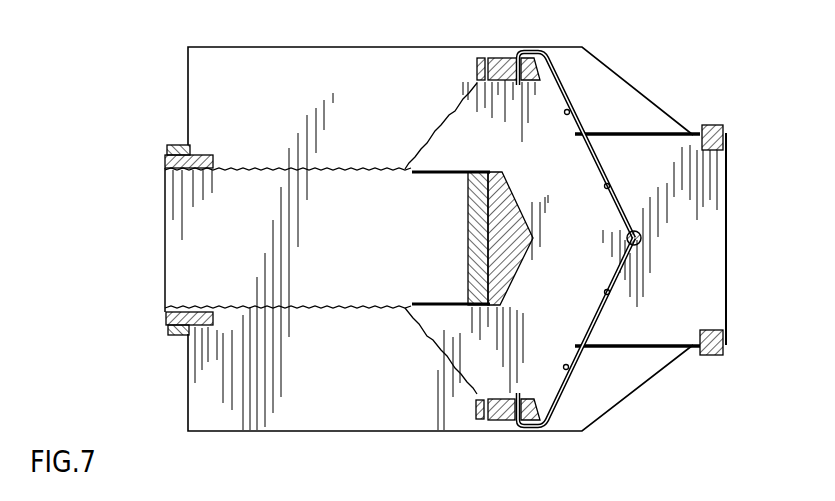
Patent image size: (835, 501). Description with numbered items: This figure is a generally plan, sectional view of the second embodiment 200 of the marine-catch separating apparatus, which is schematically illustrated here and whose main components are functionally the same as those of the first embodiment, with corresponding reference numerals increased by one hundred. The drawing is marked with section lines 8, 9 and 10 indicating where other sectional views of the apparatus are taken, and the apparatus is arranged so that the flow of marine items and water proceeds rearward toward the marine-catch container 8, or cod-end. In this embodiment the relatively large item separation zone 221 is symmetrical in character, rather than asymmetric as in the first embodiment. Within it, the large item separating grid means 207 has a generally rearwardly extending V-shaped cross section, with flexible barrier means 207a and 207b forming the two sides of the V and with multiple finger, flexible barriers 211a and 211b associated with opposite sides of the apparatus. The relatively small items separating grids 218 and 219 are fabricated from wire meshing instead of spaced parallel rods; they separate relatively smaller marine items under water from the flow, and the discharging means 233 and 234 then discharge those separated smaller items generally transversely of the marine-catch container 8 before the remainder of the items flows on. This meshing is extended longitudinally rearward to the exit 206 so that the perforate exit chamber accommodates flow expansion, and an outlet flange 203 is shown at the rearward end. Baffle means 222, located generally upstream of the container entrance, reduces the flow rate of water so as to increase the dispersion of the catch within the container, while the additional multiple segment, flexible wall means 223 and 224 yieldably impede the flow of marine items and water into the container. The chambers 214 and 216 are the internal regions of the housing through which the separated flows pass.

The second embodiment 200 is at (407, 46).
The outlet flange 203 is at (727, 150).
The exit 206 is at (168, 329).
The large item separating grid means 207 is at (641, 240).
The flexible barrier means 207a is at (615, 187).
The flexible barrier means 207b is at (577, 357).
The multiple finger flexible barrier 211a is at (643, 133).
The multiple finger flexible barrier 211b is at (650, 346).
The outlet chamber 214 is at (700, 228).
The central chamber 216 is at (589, 245).
The small items separating grid 218 is at (430, 348).
The small items separating grid 219 is at (425, 147).
The large item separation zone 221 is at (347, 250).
The baffle means 222 is at (504, 272).
The multiple segment flexible wall means 223 is at (452, 308).
The multiple segment flexible wall means 224 is at (458, 171).
The discharging means 233 is at (440, 386).
The discharging means 234 is at (430, 104).
The marine-catch container 8 is at (752, 217).
The section line 9 is at (386, 440).
The section line 10 is at (97, 303).